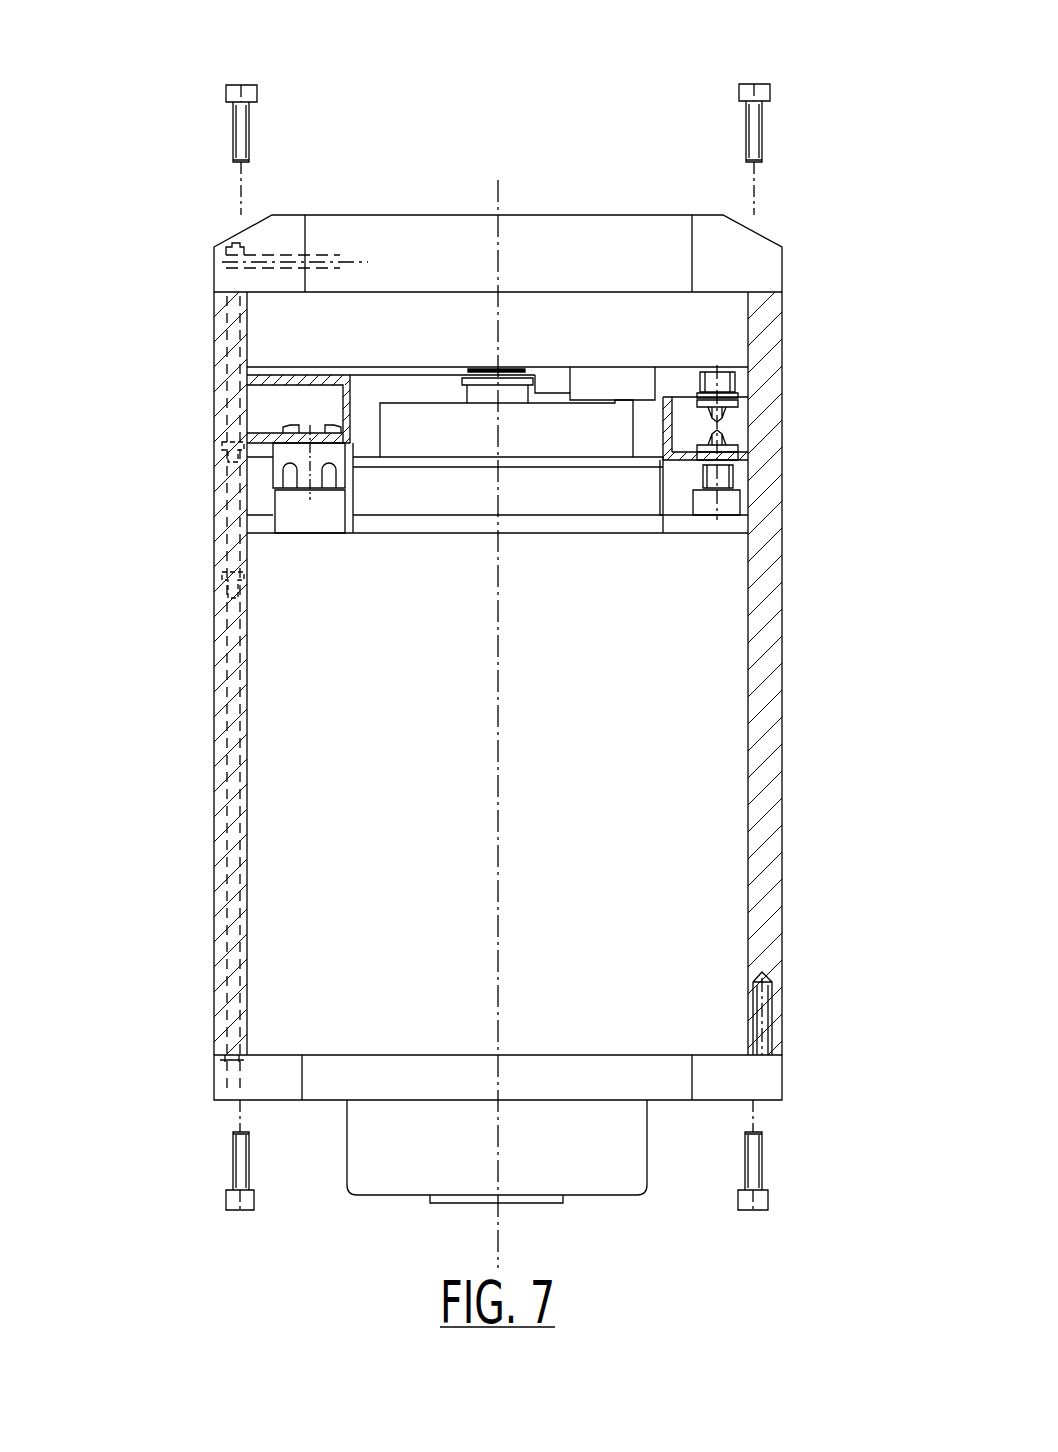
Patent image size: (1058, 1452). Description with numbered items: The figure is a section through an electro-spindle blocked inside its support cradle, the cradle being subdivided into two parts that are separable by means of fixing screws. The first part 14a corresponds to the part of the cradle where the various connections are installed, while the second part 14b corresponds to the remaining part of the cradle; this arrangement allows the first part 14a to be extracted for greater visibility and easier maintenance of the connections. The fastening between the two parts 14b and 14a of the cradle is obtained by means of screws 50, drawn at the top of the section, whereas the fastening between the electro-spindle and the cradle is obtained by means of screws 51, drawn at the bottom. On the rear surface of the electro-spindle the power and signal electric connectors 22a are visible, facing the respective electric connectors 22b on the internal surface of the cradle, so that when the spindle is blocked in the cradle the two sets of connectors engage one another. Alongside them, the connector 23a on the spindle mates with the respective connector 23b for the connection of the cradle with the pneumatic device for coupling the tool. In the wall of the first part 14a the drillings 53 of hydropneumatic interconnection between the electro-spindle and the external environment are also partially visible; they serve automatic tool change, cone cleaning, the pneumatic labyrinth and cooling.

The first part of the cradle 14a is at (773, 737).
The second part of the cradle 14b is at (383, 243).
The power and signal electric connectors 22a is at (295, 517).
The electric connectors of the cradle 22b is at (702, 440).
The connector 23a is at (730, 408).
The respective connector 23b is at (717, 363).
The screws 50 is at (238, 112).
The screws 51 is at (232, 1188).
The drillings 53 is at (222, 581).